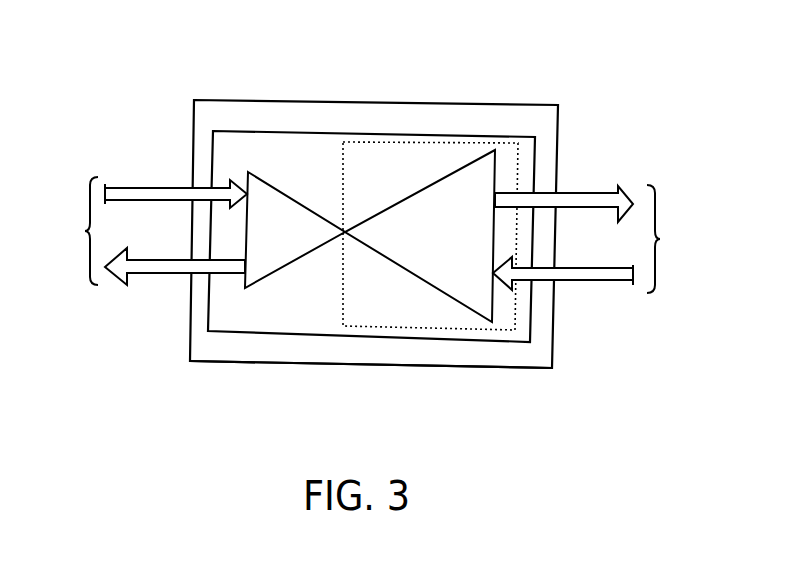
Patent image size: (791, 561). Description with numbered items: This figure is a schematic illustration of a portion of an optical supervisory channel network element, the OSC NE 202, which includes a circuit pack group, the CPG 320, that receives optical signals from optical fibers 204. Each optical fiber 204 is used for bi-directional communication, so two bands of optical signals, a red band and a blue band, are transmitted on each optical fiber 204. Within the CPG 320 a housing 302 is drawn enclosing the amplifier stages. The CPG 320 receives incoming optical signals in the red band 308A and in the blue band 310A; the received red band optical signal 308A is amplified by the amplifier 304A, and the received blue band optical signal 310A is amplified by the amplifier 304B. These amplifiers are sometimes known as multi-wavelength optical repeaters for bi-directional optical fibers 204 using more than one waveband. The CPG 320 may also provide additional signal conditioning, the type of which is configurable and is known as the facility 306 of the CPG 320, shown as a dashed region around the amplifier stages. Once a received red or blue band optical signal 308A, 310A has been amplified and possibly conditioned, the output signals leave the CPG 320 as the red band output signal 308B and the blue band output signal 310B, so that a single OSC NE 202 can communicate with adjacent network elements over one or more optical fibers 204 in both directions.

The OSC NE 202 is at (221, 368).
The optical fiber 204 is at (371, 235).
The housing 302 is at (300, 131).
The amplifier 304A is at (265, 278).
The amplifier 304B is at (383, 257).
The facility 306 is at (447, 138).
The red band incoming optical signal 308A is at (150, 188).
The red band output signal 308B is at (570, 208).
The blue band incoming optical signal 310A is at (570, 280).
The blue band output signal 310B is at (148, 260).
The circuit pack group 320 is at (340, 366).